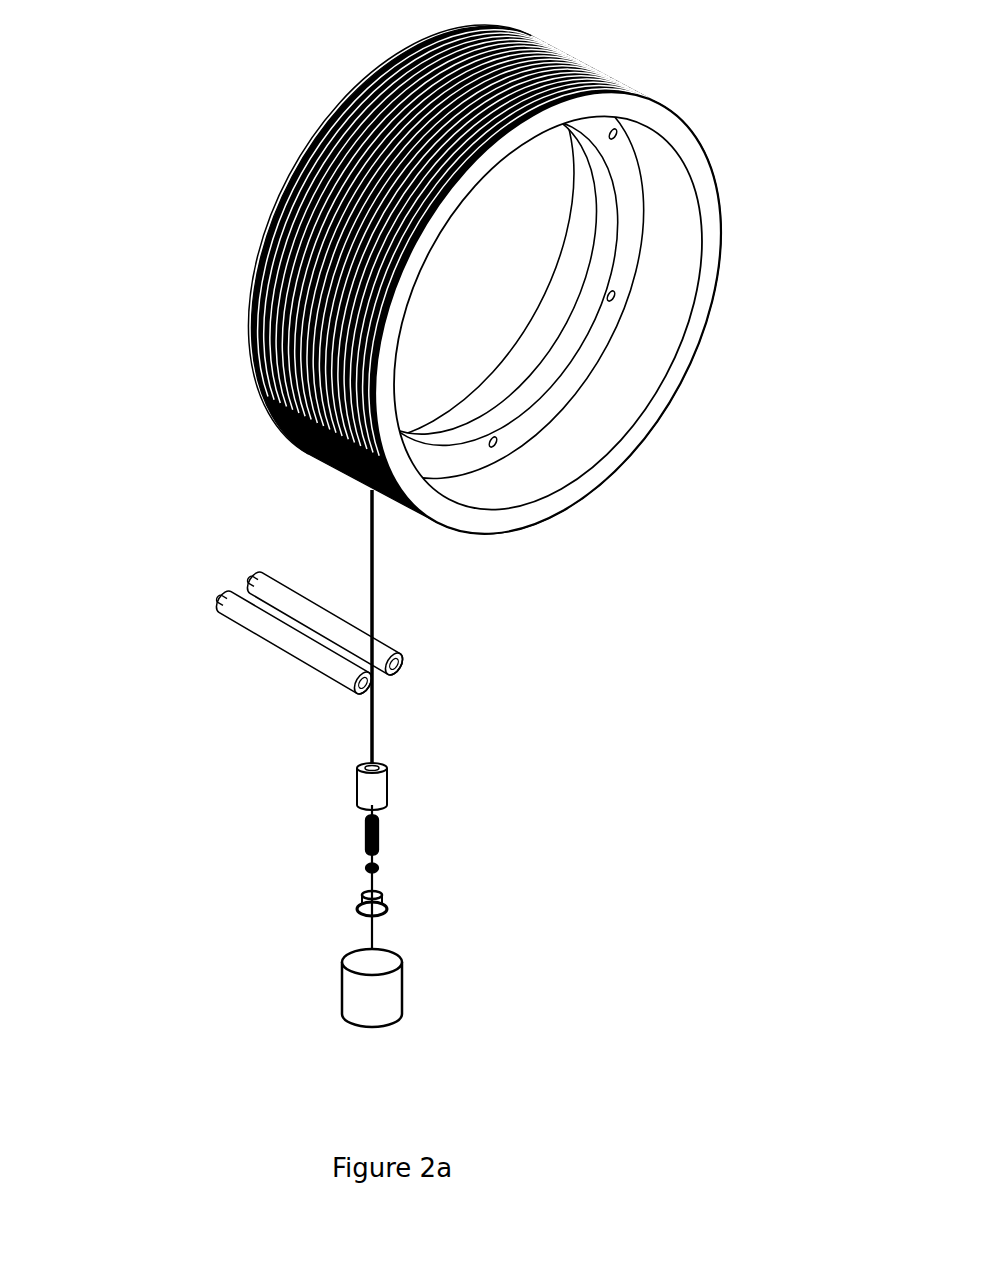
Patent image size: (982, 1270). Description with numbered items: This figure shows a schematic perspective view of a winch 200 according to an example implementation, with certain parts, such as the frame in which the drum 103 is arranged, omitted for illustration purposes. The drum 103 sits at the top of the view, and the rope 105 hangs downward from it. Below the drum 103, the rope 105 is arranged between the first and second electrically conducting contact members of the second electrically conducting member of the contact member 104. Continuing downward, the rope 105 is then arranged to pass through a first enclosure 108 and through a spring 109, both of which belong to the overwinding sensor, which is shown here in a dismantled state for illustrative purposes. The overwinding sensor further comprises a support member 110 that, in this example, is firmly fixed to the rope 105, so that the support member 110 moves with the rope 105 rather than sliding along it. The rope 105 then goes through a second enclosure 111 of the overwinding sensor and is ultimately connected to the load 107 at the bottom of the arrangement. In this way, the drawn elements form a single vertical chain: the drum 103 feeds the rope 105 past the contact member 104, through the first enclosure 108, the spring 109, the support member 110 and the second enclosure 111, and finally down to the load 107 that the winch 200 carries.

The winch 200 is at (158, 996).
The drum 103 is at (720, 241).
The contact member 104 is at (232, 625).
The rope 105 is at (380, 600).
The load 107 is at (406, 988).
The first enclosure 108 is at (392, 783).
The spring 109 is at (353, 837).
The support member 110 is at (384, 868).
The second enclosure 111 is at (358, 913).